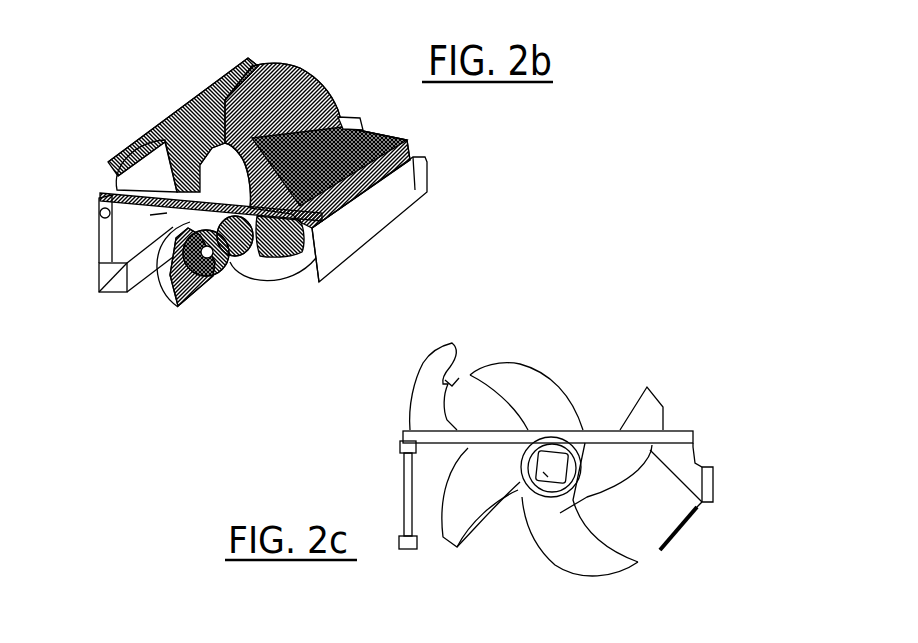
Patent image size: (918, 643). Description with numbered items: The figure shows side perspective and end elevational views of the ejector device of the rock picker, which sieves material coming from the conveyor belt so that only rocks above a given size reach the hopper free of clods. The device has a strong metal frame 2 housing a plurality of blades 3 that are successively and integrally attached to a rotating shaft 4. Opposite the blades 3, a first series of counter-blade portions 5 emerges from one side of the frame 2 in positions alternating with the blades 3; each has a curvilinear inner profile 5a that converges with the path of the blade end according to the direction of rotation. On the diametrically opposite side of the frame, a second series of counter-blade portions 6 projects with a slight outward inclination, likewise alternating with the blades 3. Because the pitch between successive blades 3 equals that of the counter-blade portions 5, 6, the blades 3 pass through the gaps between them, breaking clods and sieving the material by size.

In FIG. 2b, the frame 2 is at (140, 272).
In FIG. 2c, the frame 2 is at (603, 436).
In FIG. 2b, the blades 3 is at (270, 272).
In FIG. 2c, the blades 3 is at (570, 547).
In FIG. 2b, the rotating shaft 4 is at (213, 278).
In FIG. 2c, the rotating shaft 4 is at (530, 495).
In FIG. 2b, the first series of counter-blade portions 5 is at (140, 148).
In FIG. 2c, the first series of counter-blade portions 5 is at (423, 356).
In FIG. 2c, the curvilinear inner profile 5a is at (458, 383).
In FIG. 2b, the second series of counter-blade portions 6 is at (313, 231).
In FIG. 2c, the second series of counter-blade portions 6 is at (695, 462).